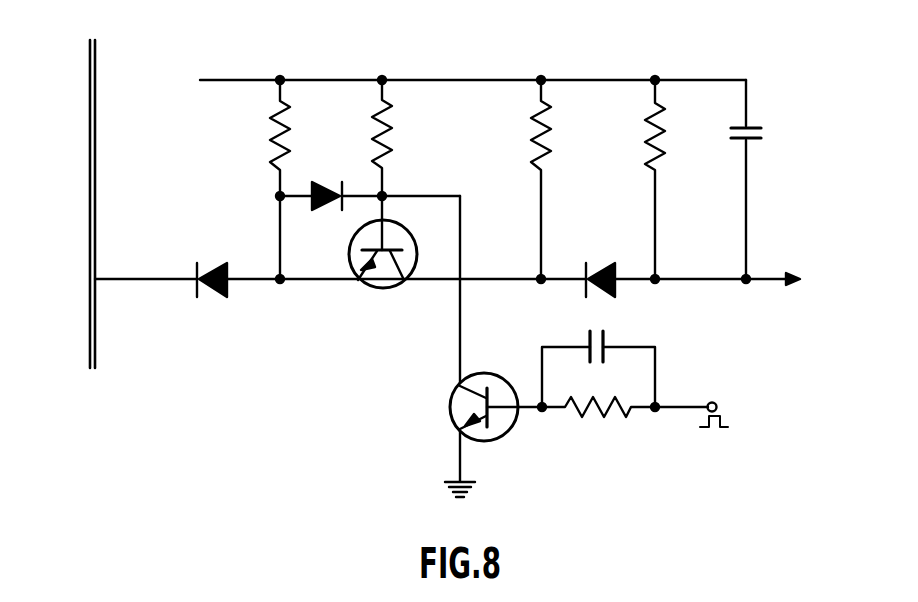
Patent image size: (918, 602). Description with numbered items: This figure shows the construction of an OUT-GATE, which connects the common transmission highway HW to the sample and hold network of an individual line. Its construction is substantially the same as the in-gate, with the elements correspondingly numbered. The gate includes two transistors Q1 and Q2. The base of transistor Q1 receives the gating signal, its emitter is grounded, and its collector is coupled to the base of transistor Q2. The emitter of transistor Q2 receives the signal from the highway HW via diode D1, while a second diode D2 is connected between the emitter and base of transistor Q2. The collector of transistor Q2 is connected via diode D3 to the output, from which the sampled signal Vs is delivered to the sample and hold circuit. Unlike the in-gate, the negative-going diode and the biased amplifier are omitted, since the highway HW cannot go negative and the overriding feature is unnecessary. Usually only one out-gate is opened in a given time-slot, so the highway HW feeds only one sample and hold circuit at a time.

The common transmission highway HW is at (96, 134).
The diode D1 is at (214, 268).
The second diode D2 is at (368, 186).
The diode D3 is at (603, 267).
The transistor Q1 is at (478, 407).
The transistor Q2 is at (383, 271).
The output voltage Vs is at (808, 281).
The output gate OUT-GATE is at (877, 196).